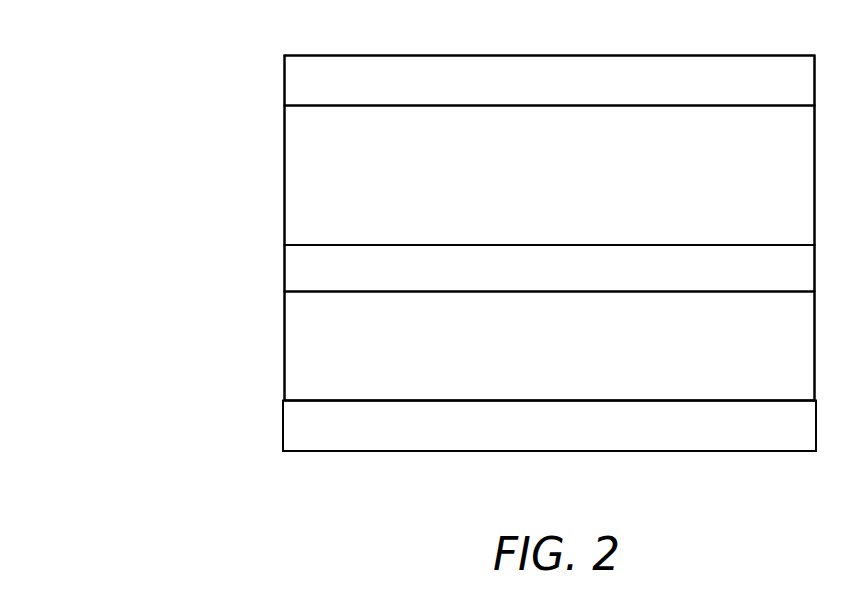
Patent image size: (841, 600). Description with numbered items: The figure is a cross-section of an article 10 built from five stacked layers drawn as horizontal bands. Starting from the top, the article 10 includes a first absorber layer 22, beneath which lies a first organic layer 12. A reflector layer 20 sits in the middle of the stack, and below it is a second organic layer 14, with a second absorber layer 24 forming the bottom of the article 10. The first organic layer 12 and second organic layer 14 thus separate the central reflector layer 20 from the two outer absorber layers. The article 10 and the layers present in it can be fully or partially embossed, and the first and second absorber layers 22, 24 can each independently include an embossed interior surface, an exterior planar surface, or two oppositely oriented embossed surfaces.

The article 10 is at (53, 31).
The first absorber layer 22 is at (285, 82).
The first organic layer 12 is at (285, 176).
The reflector layer 20 is at (285, 270).
The second organic layer 14 is at (285, 349).
The second absorber layer 24 is at (283, 428).